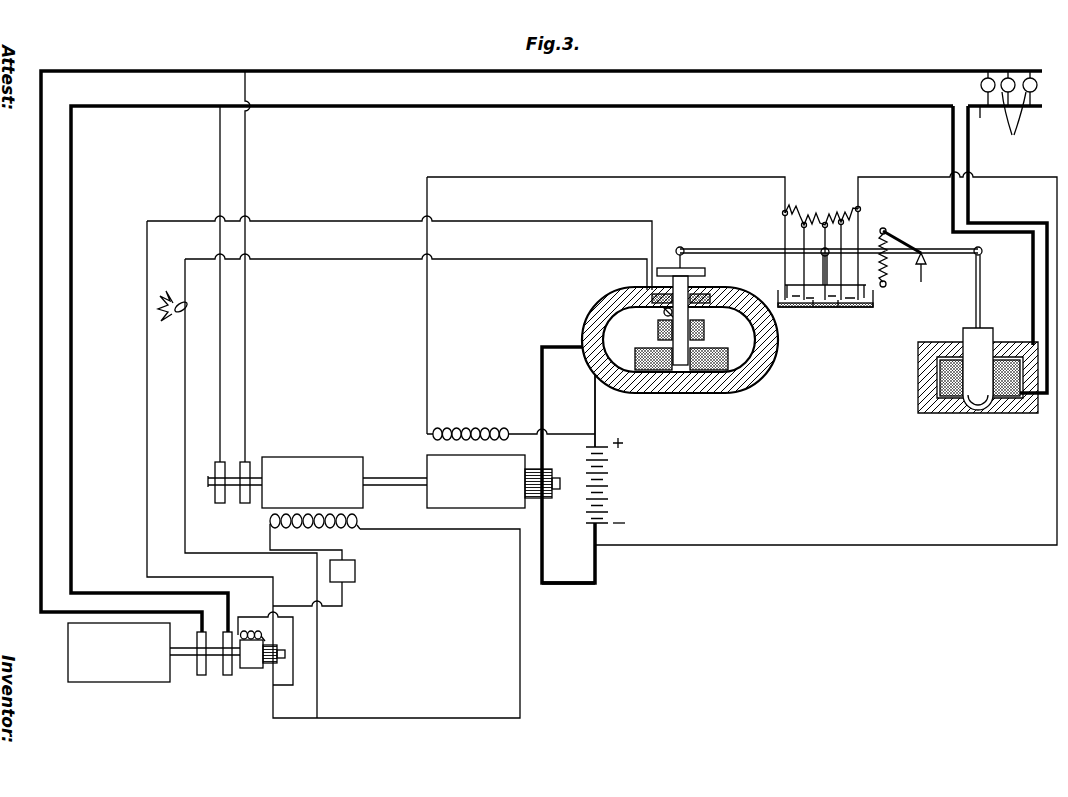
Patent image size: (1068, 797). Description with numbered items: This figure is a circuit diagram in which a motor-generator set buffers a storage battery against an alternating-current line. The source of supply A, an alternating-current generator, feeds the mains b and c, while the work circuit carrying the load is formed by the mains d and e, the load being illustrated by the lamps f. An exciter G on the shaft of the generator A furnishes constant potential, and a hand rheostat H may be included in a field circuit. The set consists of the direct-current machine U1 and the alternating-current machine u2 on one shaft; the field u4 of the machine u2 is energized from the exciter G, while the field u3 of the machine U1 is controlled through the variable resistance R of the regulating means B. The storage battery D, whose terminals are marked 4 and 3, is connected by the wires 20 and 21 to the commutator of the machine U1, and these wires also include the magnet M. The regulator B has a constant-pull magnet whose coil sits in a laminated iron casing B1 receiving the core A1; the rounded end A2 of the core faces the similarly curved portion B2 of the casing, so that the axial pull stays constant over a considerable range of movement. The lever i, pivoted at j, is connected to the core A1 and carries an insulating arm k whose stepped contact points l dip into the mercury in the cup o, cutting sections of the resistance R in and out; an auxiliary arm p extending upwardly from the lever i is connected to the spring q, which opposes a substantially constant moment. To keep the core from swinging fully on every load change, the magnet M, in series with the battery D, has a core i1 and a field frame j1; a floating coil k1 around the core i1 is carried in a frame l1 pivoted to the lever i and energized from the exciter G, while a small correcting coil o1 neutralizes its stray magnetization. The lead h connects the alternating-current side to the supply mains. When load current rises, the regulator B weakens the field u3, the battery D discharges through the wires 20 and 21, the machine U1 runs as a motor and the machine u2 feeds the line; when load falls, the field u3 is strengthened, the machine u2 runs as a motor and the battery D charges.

The main b is at (148, 99).
The main c is at (522, 351).
The main e is at (997, 70).
The main d is at (981, 118).
The lamps f is at (1014, 124).
The hand rheostat H is at (188, 318).
The alternating current machine u2 is at (317, 482).
The direct current machine U1 is at (493, 481).
The field of the direct current machine u3 is at (511, 308).
The field of the alternating current machine u4 is at (315, 560).
The source of supply A is at (154, 652).
The exciter G is at (255, 661).
The wire 20 is at (541, 346).
The wire 21 is at (567, 586).
The storage battery D is at (608, 449).
The positive battery terminal 4 is at (603, 446).
The negative battery terminal 3 is at (600, 523).
The regulating means B is at (680, 341).
The magnet M is at (643, 388).
The field frame j1 is at (721, 390).
The floating coil k1 is at (655, 296).
The correcting coil o1 is at (663, 328).
The core i1 is at (681, 372).
The frame l1 is at (661, 288).
The lever i is at (729, 248).
The variable resistance R is at (822, 242).
The arm of insulation k is at (783, 289).
The contact points l is at (812, 308).
The cup o is at (838, 308).
The auxiliary arm p is at (895, 238).
The spring q is at (888, 268).
The pivot j is at (922, 278).
The lead h is at (936, 384).
The curved portion of casing B2 is at (1000, 413).
The laminated iron casing B1 is at (1033, 413).
The core A1 is at (982, 346).
The rounded end of core A2 is at (977, 402).